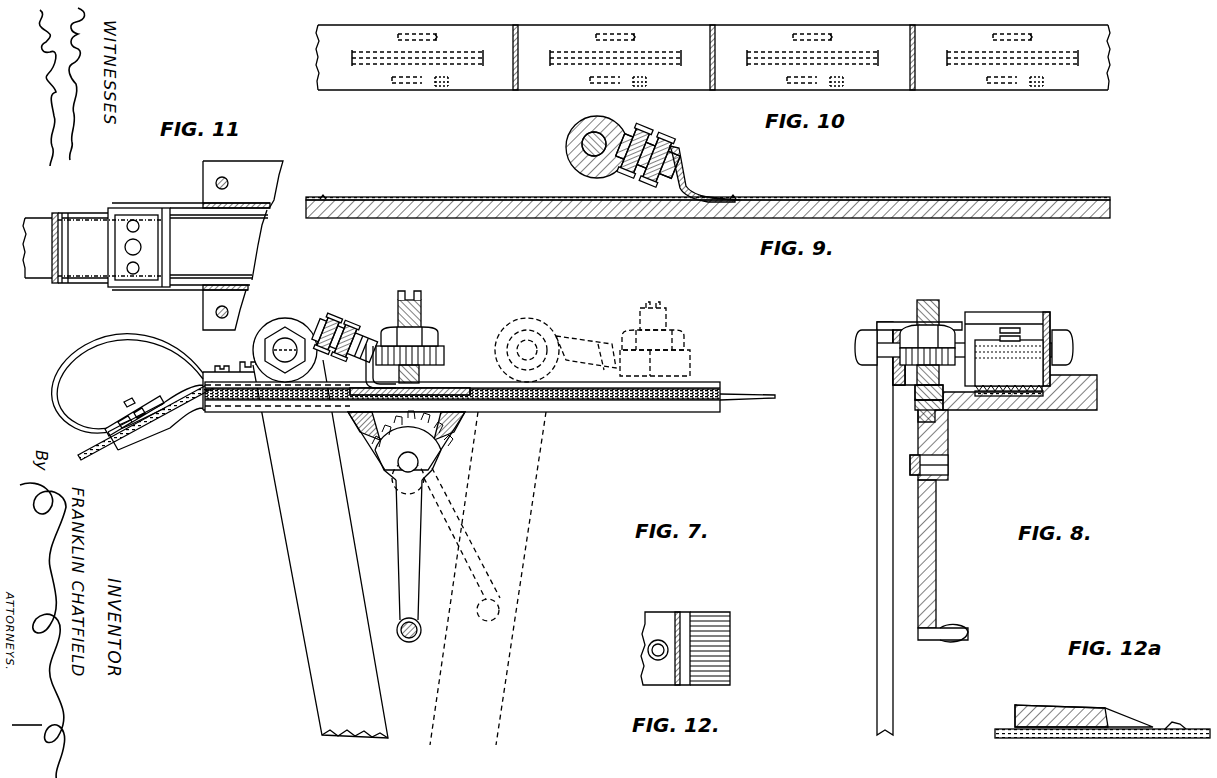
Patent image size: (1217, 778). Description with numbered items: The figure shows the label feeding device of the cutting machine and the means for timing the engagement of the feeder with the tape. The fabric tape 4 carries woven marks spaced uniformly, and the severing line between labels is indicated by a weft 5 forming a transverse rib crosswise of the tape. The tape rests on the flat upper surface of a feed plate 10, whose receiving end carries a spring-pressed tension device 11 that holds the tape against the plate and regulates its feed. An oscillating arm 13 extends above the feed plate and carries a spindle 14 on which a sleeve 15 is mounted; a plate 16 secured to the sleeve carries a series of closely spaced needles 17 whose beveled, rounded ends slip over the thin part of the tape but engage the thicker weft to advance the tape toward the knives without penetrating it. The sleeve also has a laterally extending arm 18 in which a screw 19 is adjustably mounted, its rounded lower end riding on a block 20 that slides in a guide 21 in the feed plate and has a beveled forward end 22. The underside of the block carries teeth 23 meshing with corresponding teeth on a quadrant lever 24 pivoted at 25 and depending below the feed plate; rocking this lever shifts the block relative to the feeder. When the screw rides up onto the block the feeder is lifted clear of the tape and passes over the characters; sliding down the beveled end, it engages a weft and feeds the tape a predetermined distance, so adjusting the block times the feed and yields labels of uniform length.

In FIG. 10, the tape 4 is at (360, 84).
In FIG. 9, the tape 4 is at (462, 199).
In FIG. 7, the tape 4 is at (96, 455).
In FIG. 8, the tape 4 is at (1052, 396).
In FIG. 12A, the tape 4 is at (1114, 740).
In FIG. 10, the weft 5 is at (516, 30).
In FIG. 9, the weft 5 is at (515, 199).
In FIG. 12A, the weft 5 is at (1178, 722).
In FIG. 9, the feed plate 10 is at (633, 219).
In FIG. 11, the feed plate 10 is at (266, 190).
In FIG. 7, the feed plate 10 is at (186, 416).
In FIG. 8, the feed plate 10 is at (1100, 410).
In FIG. 11, the spring-pressed tension device 11 is at (128, 212).
In FIG. 7, the spring-pressed tension device 11 is at (120, 412).
In FIG. 7, the arm 13 is at (276, 458).
In FIG. 8, the arm 13 is at (877, 438).
In FIG. 9, the spindle 14 is at (585, 145).
In FIG. 7, the spindle 14 is at (290, 346).
In FIG. 8, the spindle 14 is at (855, 349).
In FIG. 9, the sleeve 15 is at (567, 162).
In FIG. 7, the sleeve 15 is at (290, 320).
In FIG. 8, the sleeve 15 is at (1026, 316).
In FIG. 9, the plate 16 is at (683, 184).
In FIG. 7, the plate 16 is at (338, 336).
In FIG. 8, the plate 16 is at (1009, 357).
In FIG. 12, the plate 16 is at (664, 612).
In FIG. 9, the needles 17 is at (730, 198).
In FIG. 8, the needles 17 is at (1040, 392).
In FIG. 12, the needles 17 is at (716, 612).
In FIG. 12A, the needles 17 is at (1116, 718).
In FIG. 7, the laterally extending arm 18 is at (444, 354).
In FIG. 8, the laterally extending arm 18 is at (903, 358).
In FIG. 7, the screw 19 is at (424, 318).
In FIG. 8, the screw 19 is at (926, 308).
In FIG. 7, the block 20 is at (444, 388).
In FIG. 8, the block 20 is at (915, 392).
In FIG. 8, the guide 21 is at (918, 405).
In FIG. 7, the beveled forward end 22 is at (470, 399).
In FIG. 7, the teeth 23 is at (440, 430).
In FIG. 8, the teeth 23 is at (948, 428).
In FIG. 7, the quadrant lever 24 is at (424, 454).
In FIG. 8, the quadrant lever 24 is at (936, 496).
In FIG. 7, the pivot 25 is at (400, 466).
In FIG. 8, the pivot 25 is at (948, 465).